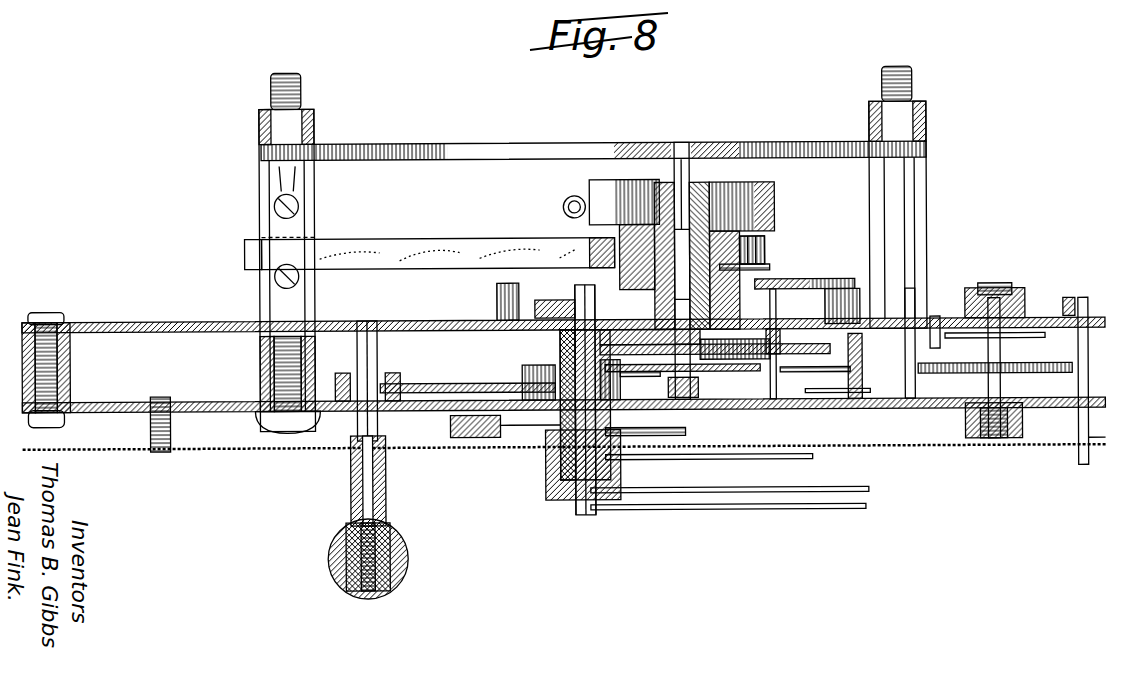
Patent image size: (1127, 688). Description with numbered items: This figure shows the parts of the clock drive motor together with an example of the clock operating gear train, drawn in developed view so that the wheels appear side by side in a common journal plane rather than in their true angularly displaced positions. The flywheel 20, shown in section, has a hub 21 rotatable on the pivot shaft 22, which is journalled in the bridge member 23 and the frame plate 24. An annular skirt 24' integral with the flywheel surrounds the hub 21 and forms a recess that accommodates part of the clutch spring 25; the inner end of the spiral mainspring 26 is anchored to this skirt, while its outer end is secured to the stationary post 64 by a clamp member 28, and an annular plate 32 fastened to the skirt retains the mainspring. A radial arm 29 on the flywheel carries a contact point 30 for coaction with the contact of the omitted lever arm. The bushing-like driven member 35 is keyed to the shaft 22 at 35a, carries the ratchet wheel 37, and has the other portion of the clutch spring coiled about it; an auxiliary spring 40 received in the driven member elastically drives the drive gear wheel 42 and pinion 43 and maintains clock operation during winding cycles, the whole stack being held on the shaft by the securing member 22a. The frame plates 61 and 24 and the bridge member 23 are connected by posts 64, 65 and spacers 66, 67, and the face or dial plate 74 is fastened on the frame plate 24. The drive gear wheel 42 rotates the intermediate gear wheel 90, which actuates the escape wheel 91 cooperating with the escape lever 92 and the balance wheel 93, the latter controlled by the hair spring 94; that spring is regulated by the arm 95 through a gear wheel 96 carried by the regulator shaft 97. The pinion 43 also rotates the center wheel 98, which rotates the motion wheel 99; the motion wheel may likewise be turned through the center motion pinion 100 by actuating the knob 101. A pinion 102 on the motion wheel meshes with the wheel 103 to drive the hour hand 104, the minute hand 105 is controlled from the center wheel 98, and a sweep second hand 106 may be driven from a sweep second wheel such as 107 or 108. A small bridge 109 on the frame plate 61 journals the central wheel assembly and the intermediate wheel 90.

The flywheel 20 is at (775, 208).
The hub 21 is at (710, 240).
The pivot shaft 22 is at (692, 196).
The securing member 22a is at (698, 390).
The bridge member 23 is at (518, 146).
The frame plate 24 is at (563, 401).
The annular skirt 24' is at (779, 238).
The clutch spring 25 is at (755, 285).
The mainspring 26 is at (392, 238).
The clamp member 28 is at (270, 231).
The arm 29 is at (590, 192).
The contact point 30 is at (563, 206).
The annular plate 32 is at (770, 268).
The driven member 35 is at (776, 332).
The key 35a is at (650, 323).
The ratchet wheel 37 is at (630, 320).
The auxiliary spring 40 is at (745, 352).
The drive gear wheel 42 is at (682, 364).
The pinion 43 is at (662, 375).
The frame plate 61 is at (134, 330).
The post 64 is at (262, 206).
The post 65 is at (927, 228).
The spacer 66 is at (70, 366).
The spacer 67 is at (262, 368).
The dial plate 74 is at (216, 450).
The intermediate gear wheel 90 is at (812, 378).
The escape wheel 91 is at (865, 390).
The escape lever 92 is at (965, 412).
The balance wheel 93 is at (1015, 375).
The hair spring 94 is at (1005, 340).
The regulator arm 95 is at (955, 305).
The gear wheel 96 is at (1075, 300).
The regulator shaft 97 is at (1088, 378).
The center wheel 98 is at (623, 380).
The motion wheel 99 is at (436, 383).
The center motion pinion 100 is at (385, 372).
The knob 101 is at (390, 530).
The pinion 102 is at (450, 428).
The wheel 103 is at (685, 430).
The hour hand 104 is at (668, 462).
The minute hand 105 is at (737, 493).
The sweep second hand 106 is at (748, 510).
The sweep second wheel 107 is at (555, 309).
The sweep second wheel 108 is at (825, 300).
The small bridge 109 is at (497, 294).